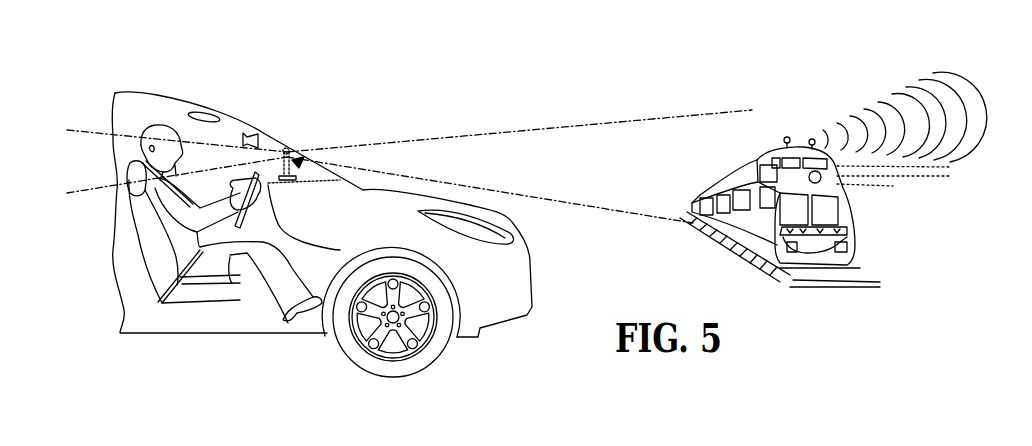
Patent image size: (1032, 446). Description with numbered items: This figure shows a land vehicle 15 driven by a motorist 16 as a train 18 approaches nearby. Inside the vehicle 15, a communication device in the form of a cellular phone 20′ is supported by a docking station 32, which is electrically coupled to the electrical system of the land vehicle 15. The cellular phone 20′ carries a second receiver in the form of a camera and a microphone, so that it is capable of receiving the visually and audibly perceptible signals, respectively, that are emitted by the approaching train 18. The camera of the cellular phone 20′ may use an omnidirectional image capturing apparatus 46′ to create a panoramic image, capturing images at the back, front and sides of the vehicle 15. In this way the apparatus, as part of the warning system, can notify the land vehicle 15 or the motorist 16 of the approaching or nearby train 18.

The land vehicle 15 is at (143, 96).
The motorist 16 is at (160, 123).
The omnidirectional image capturing apparatus 46′ is at (288, 148).
The cellular phone 20′ is at (292, 162).
The docking station 32 is at (313, 185).
The train 18 is at (857, 222).